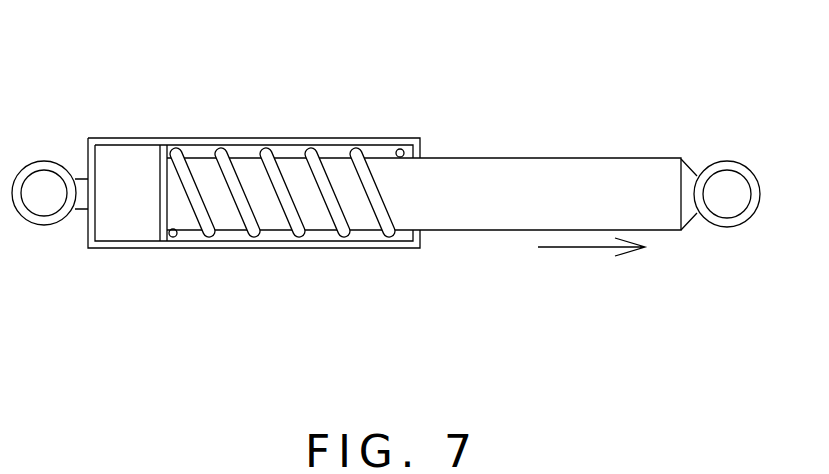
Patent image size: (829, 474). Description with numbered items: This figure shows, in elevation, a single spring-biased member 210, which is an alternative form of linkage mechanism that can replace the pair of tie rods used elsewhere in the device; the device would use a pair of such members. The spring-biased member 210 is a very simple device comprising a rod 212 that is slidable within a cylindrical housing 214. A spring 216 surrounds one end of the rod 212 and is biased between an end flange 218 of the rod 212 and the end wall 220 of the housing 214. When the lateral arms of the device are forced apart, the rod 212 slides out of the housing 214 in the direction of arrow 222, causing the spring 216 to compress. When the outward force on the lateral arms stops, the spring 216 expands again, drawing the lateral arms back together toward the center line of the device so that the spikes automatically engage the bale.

The spring-biased member 210 is at (386, 176).
The rod 212 is at (572, 180).
The cylindrical housing 214 is at (125, 138).
The spring 216 is at (235, 170).
The end flange 218 is at (163, 232).
The end wall 220 is at (420, 238).
The arrow 222 is at (585, 247).